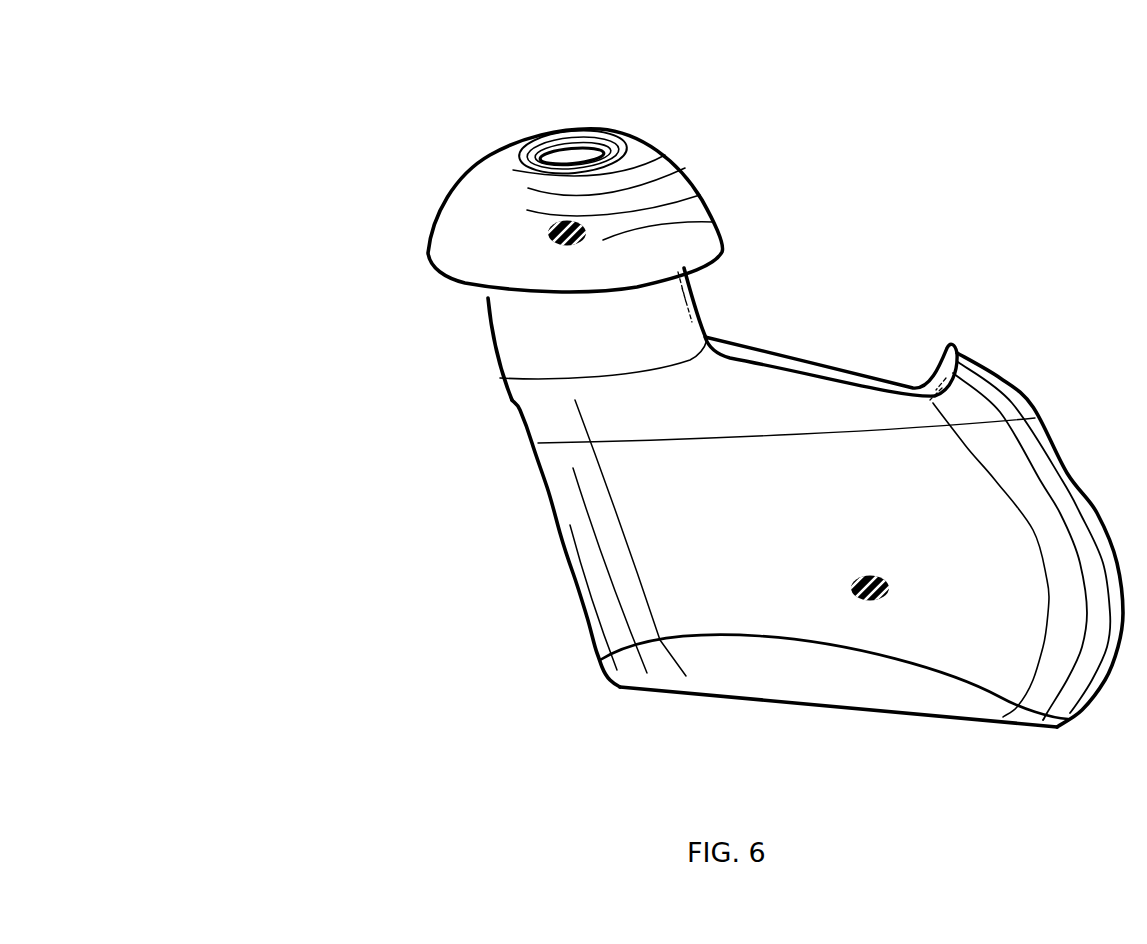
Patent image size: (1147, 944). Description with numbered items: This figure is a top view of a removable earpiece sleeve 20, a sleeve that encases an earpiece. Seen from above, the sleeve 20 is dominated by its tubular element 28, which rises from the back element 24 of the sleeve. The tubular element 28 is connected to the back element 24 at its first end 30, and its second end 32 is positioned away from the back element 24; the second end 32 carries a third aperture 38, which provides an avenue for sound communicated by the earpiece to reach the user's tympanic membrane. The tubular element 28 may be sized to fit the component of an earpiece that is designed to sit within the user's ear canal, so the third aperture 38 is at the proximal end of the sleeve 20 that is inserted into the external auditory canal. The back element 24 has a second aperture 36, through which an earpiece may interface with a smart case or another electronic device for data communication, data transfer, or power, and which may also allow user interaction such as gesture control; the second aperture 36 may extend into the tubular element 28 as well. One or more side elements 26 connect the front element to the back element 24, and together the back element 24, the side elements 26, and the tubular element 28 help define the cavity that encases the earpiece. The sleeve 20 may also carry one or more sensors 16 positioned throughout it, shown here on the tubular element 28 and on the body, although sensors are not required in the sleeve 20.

The removable earpiece sleeve 20 is at (331, 174).
The sensors 16 is at (562, 223).
The third aperture 38 is at (593, 131).
The second end 32 is at (480, 233).
The tubular element 28 is at (548, 322).
The first end 30 is at (550, 380).
The back element 24 is at (540, 408).
The side elements 26 is at (585, 578).
The second aperture 36 is at (937, 380).